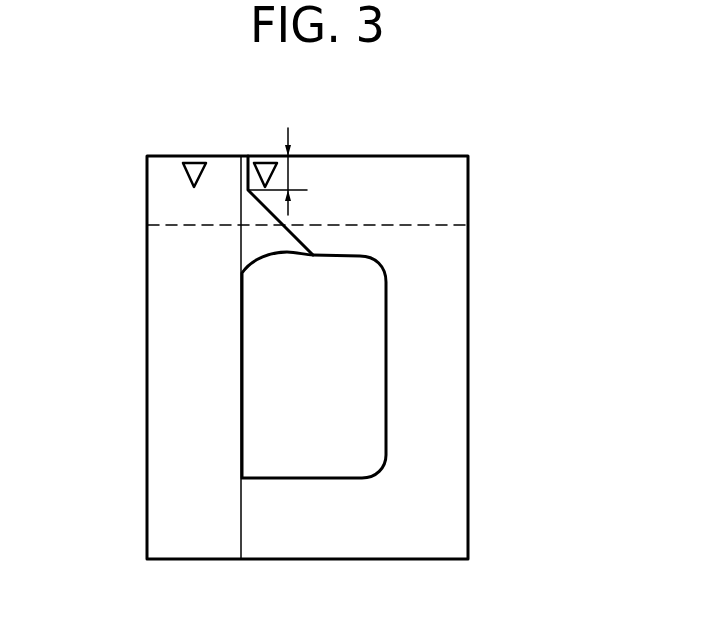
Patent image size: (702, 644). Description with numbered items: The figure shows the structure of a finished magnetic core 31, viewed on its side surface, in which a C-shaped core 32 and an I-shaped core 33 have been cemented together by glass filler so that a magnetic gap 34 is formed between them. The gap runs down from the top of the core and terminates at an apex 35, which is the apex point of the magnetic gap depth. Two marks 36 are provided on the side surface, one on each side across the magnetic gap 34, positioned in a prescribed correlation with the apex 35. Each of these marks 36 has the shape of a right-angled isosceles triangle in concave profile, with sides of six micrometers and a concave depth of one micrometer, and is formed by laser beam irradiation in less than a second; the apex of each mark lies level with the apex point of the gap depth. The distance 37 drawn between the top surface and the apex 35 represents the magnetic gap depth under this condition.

The magnetic core 31 is at (456, 138).
The C-shaped core 32 is at (442, 325).
The I-shaped core 33 is at (180, 338).
The magnetic gap 34 is at (243, 156).
The apex 35 is at (245, 197).
The marks 36 is at (203, 158).
The distance 37 is at (297, 177).